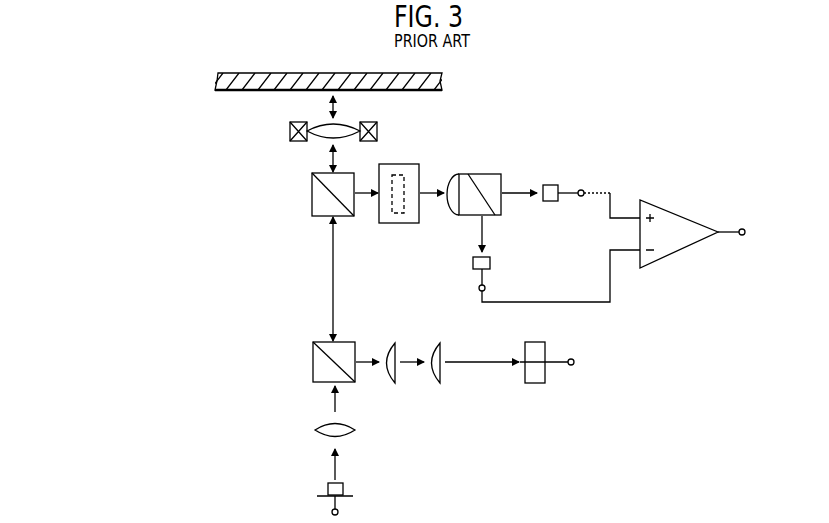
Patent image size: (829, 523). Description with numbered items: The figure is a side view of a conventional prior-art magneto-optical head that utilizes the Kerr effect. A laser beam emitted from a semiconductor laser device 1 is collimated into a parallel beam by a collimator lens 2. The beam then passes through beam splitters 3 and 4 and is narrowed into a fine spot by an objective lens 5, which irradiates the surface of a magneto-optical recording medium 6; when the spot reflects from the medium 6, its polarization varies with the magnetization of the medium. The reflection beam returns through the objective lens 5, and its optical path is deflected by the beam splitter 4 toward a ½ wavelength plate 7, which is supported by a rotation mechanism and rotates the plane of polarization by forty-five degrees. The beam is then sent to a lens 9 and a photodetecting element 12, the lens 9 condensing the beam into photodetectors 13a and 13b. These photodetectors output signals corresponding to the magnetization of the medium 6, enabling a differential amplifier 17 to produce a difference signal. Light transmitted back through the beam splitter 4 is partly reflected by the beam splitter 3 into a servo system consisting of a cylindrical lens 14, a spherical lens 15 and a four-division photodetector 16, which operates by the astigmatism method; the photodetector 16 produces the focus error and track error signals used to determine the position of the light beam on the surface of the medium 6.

The semiconductor laser device 1 is at (326, 489).
The collimator lens 2 is at (320, 426).
The beam splitter 3 is at (313, 355).
The beam splitter 4 is at (312, 191).
The objective lens 5 is at (290, 137).
The magneto-optical recording medium 6 is at (216, 78).
The ½ wavelength plate 7 is at (395, 176).
The lens 9 is at (447, 180).
The photodetecting element 12 is at (478, 173).
The photodetector 13a is at (556, 184).
The photodetector 13b is at (492, 264).
The cylindrical lens 14 is at (386, 344).
The spherical lens 15 is at (430, 344).
The four-division photodetector 16 is at (527, 342).
The differential amplifier 17 is at (668, 208).